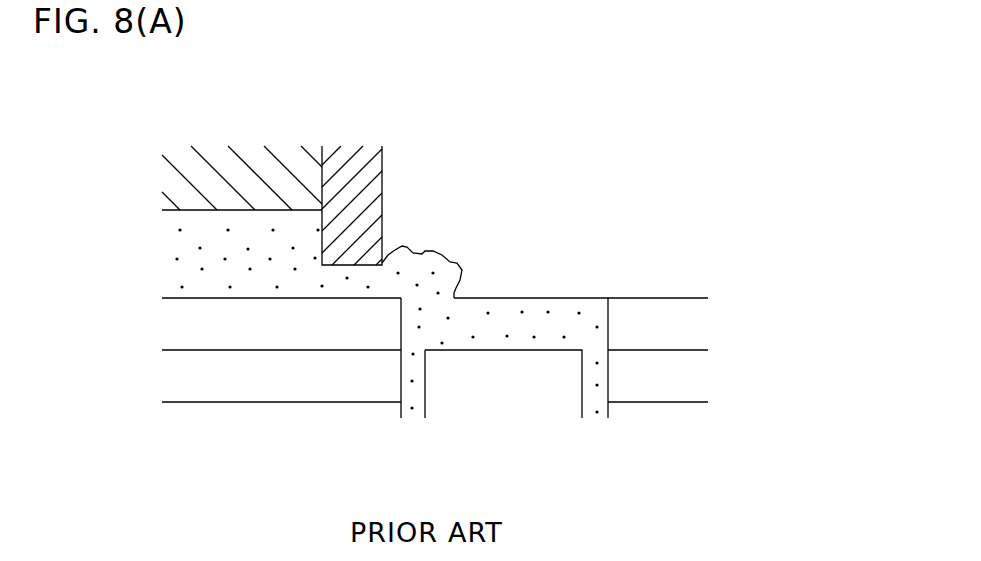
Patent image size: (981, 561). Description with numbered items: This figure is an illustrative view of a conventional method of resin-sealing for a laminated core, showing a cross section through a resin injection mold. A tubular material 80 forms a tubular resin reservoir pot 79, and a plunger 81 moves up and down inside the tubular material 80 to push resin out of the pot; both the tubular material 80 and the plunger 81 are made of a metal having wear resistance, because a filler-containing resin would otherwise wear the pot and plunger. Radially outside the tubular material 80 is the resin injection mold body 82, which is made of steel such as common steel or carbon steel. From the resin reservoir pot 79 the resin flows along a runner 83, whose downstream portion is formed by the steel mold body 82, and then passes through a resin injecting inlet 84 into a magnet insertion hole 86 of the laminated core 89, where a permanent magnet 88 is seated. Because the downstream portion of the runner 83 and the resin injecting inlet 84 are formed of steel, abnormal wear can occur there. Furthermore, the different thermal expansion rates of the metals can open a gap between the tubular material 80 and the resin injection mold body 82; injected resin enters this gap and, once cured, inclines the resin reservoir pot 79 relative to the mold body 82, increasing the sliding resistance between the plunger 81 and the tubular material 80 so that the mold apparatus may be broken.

The resin reservoir pot 79 is at (222, 262).
The tubular material 80 is at (352, 193).
The plunger 81 is at (285, 185).
The resin injection mold body 82 is at (553, 278).
The runner 83 is at (345, 275).
The resin injecting inlet 84 is at (422, 302).
The magnet insertion hole 86 is at (596, 398).
The permanent magnet 88 is at (542, 385).
The laminated core 89 is at (717, 320).